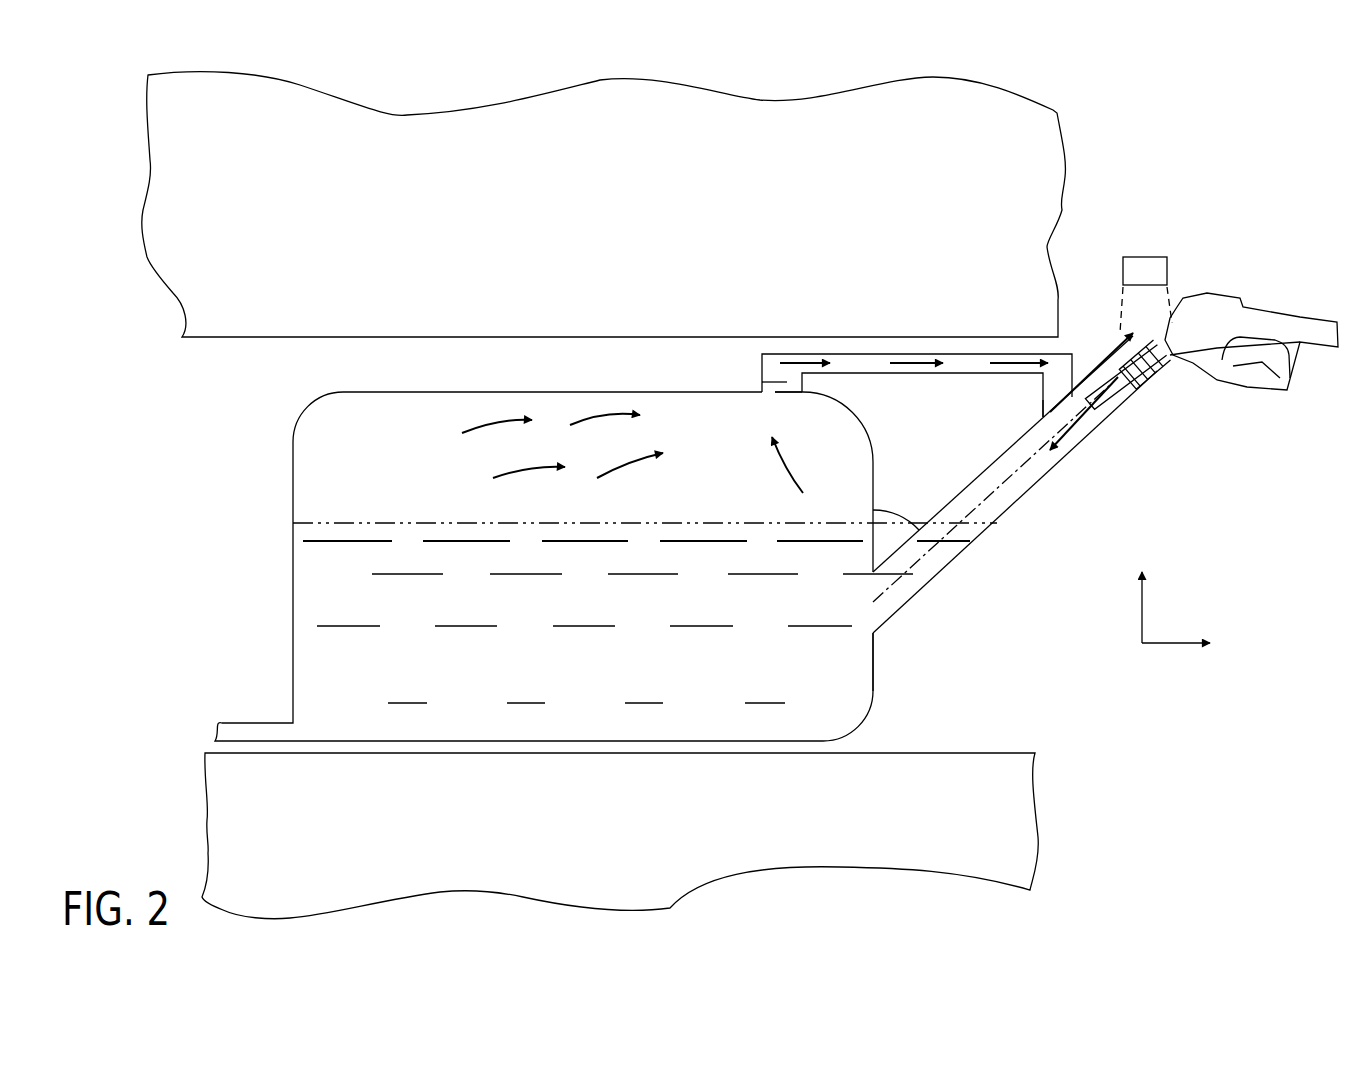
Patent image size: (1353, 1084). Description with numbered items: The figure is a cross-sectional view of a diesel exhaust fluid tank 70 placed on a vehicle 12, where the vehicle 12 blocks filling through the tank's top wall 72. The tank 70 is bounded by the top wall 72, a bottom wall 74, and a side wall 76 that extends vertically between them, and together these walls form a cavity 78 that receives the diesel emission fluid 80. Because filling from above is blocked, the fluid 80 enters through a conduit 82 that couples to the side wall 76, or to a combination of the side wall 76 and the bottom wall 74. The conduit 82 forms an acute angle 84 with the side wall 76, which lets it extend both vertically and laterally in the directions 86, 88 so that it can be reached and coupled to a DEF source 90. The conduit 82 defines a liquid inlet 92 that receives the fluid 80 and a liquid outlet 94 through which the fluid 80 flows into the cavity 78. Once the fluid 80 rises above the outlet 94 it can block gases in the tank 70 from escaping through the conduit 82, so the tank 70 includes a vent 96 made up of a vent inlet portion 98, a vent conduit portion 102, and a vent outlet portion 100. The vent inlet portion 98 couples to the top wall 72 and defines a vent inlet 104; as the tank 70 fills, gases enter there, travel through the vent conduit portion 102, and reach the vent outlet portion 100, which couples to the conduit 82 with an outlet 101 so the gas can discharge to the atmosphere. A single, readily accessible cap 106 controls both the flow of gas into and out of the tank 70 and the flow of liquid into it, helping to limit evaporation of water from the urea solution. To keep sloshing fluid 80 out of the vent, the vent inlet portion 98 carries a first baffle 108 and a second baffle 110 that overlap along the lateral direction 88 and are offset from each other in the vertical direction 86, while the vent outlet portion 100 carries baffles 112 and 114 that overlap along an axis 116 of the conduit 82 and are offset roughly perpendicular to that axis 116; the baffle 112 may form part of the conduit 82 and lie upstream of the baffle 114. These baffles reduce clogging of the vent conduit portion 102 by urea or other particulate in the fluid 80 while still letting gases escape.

The vehicle 12 is at (541, 196).
The tank 70 is at (1057, 607).
The top wall 72 is at (500, 392).
The bottom wall 74 is at (517, 742).
The side wall 76 is at (875, 657).
The cavity 78 is at (450, 473).
The diesel emission fluid 80 is at (450, 673).
The conduit 82 is at (1053, 468).
The acute angle 84 is at (907, 512).
The vertical direction 86 is at (1143, 613).
The lateral direction 88 is at (1170, 645).
The DEF source 90 is at (1230, 300).
The liquid inlet 92 is at (1145, 380).
The liquid outlet 94 is at (873, 632).
The vent 96 is at (780, 327).
The vent inlet portion 98 is at (733, 358).
The vent outlet portion 100 is at (1043, 327).
The outlet 101 is at (1027, 413).
The vent conduit portion 102 is at (897, 353).
The vent inlet 104 is at (765, 395).
The cap 106 is at (1145, 257).
The first baffle 108 is at (788, 395).
The second baffle 110 is at (777, 380).
The baffle 112 is at (1072, 390).
The baffle 114 is at (1055, 395).
The axis 116 is at (917, 563).